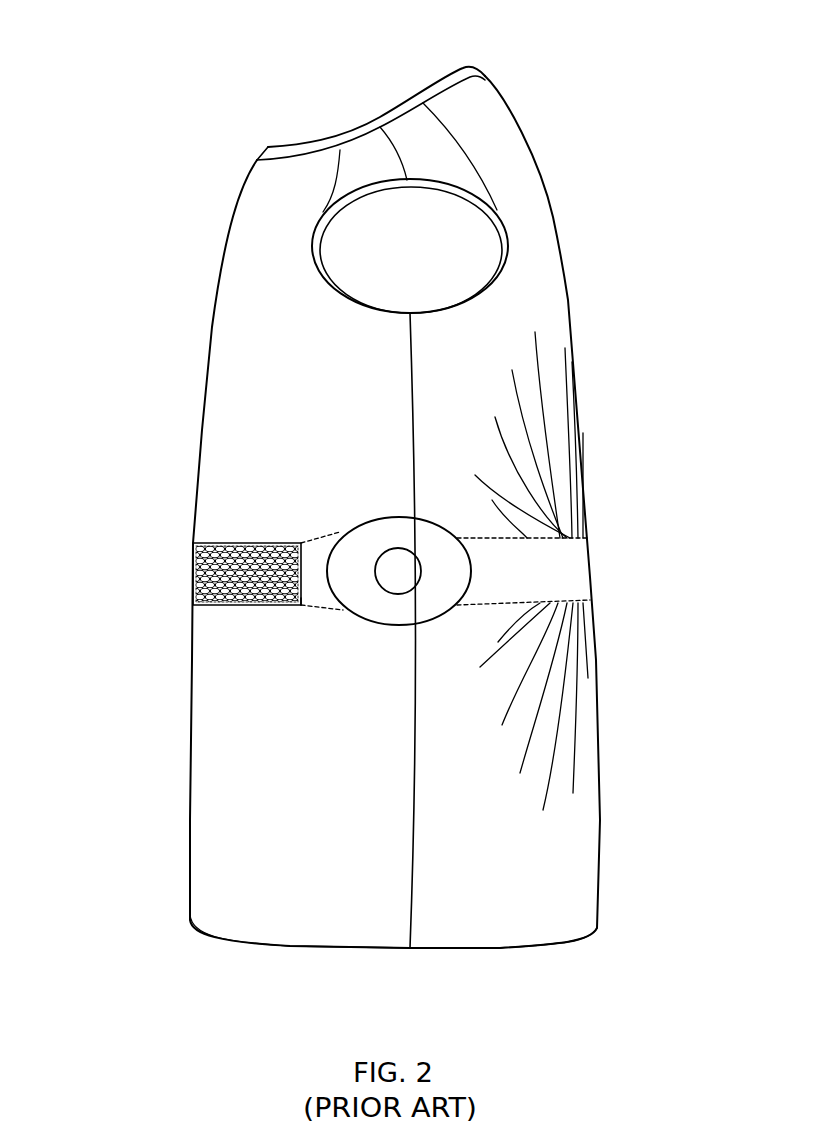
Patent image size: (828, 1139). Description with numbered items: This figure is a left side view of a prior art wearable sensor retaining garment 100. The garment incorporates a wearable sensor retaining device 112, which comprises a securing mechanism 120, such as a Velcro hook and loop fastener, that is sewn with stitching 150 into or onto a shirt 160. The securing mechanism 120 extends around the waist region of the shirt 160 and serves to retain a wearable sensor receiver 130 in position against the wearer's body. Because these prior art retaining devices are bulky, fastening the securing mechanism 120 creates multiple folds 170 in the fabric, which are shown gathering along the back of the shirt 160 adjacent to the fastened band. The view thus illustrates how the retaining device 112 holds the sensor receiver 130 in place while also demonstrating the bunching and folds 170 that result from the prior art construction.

The wearable sensor retaining garment 100 is at (172, 62).
The wearable sensor retaining device 112 is at (317, 600).
The securing mechanism 120 is at (167, 543).
The wearable sensor receiver 130 is at (393, 560).
The stitching 150 is at (242, 545).
The shirt 160 is at (514, 914).
The folds 170 is at (562, 658).